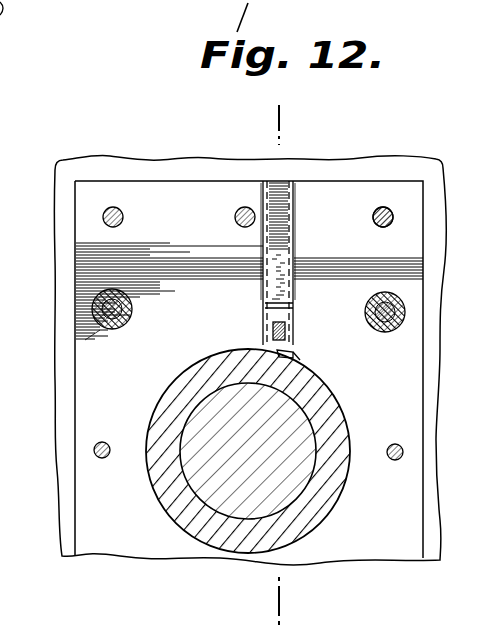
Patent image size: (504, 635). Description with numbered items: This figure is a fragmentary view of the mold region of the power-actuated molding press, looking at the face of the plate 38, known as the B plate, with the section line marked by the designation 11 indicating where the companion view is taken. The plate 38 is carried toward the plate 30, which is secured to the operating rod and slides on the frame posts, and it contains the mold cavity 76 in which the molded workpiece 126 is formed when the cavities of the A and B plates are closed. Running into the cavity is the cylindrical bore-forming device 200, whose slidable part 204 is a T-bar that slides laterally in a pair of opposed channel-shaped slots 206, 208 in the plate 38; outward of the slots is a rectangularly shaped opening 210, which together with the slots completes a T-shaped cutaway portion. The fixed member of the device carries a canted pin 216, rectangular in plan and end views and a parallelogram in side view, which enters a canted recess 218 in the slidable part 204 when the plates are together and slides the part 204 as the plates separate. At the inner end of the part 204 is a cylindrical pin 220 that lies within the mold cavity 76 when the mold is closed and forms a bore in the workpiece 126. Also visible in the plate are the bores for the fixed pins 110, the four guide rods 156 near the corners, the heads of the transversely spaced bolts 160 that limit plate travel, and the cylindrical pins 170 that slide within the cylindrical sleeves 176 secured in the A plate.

The plate 30 is at (66, 535).
The plate 38 is at (93, 400).
The mold cavity 76 is at (336, 418).
The molded workpiece 126 is at (291, 530).
The cylindrical bore-forming device 200 is at (262, 307).
The slidable part 204 is at (268, 312).
The channel-shaped slot 208 is at (262, 198).
The rectangularly shaped opening 210 is at (283, 190).
The channel-shaped slot 206 is at (291, 213).
The canted pin 216 is at (287, 326).
The canted recess 218 is at (280, 351).
The cylindrical pin 220 is at (300, 360).
The guide rods 156 is at (107, 207).
The cylindrical rods or pins 110 is at (238, 213).
The cylindrical pins 170 is at (98, 297).
The cylindrical sleeves 176 is at (85, 338).
The bolts 160 is at (95, 453).
The section line 11- 11 is at (276, 118).